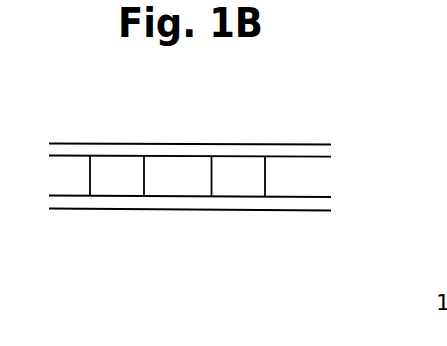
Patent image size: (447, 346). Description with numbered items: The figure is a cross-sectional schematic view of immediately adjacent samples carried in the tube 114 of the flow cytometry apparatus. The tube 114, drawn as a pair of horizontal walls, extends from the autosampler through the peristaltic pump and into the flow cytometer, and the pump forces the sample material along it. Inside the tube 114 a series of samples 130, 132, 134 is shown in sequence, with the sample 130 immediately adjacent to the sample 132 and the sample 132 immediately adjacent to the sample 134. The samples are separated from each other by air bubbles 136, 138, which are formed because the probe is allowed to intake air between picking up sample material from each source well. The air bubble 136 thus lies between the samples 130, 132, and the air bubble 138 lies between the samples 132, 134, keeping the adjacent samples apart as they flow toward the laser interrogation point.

The tube 114 is at (304, 158).
The sample 130 is at (64, 182).
The sample 132 is at (184, 182).
The sample 134 is at (304, 184).
The air bubble 136 is at (117, 182).
The air bubble 138 is at (238, 184).